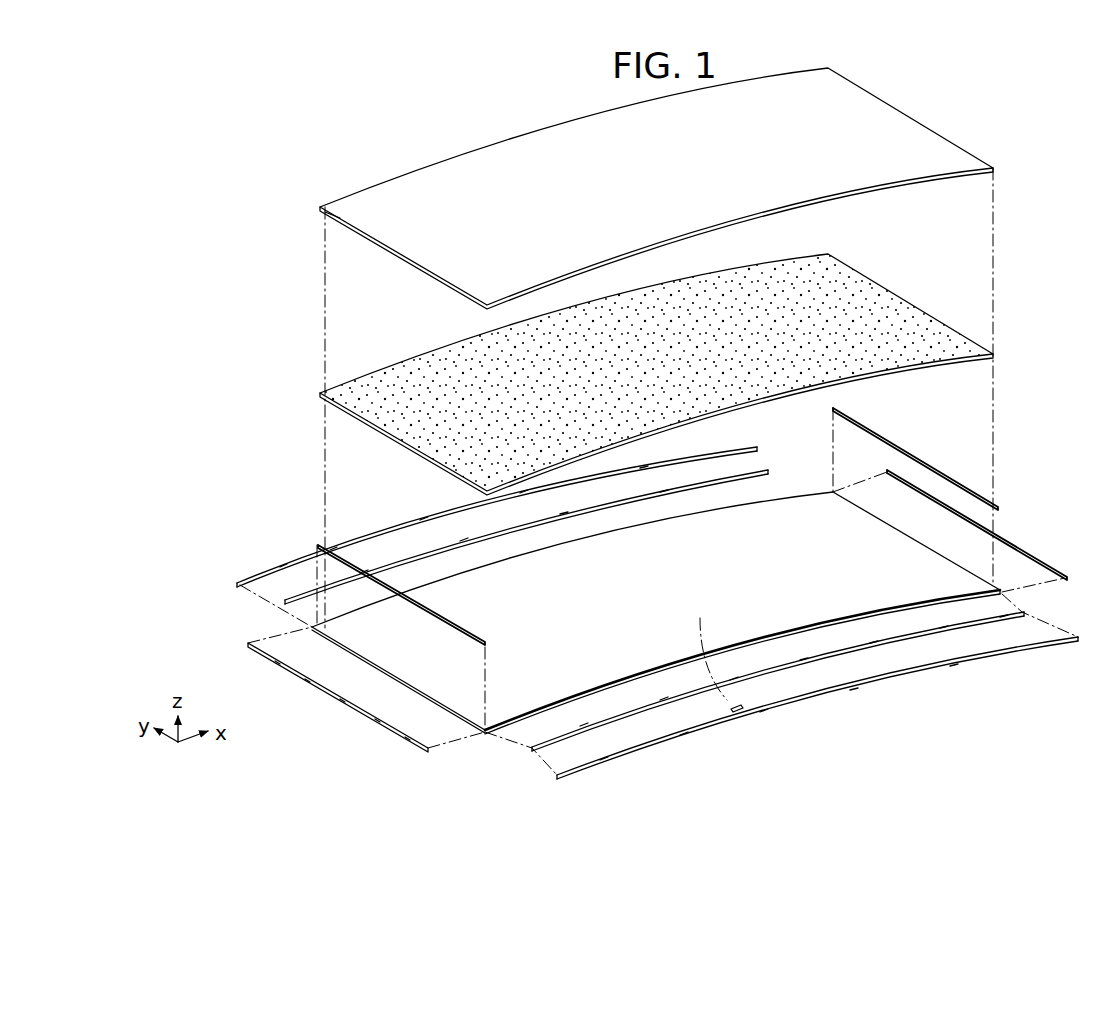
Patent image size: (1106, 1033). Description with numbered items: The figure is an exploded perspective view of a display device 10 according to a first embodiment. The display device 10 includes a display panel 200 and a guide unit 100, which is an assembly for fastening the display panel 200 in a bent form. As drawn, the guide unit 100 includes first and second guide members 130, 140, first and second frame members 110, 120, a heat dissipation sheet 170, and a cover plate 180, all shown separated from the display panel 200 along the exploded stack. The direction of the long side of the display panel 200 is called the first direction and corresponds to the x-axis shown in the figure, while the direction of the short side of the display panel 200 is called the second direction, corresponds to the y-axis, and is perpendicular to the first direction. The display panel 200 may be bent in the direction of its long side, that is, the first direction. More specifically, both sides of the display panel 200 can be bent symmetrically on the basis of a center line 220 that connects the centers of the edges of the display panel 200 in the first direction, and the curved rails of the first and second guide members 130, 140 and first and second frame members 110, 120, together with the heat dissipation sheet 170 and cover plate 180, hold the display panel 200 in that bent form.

The display device 10 is at (1019, 79).
The guide unit 100 is at (191, 278).
The first frame member 110 is at (288, 563).
The second frame member 120 is at (296, 674).
The first guide member 130 is at (433, 548).
The second guide member 140 is at (437, 618).
The heat dissipation sheet 170 is at (868, 297).
The cover plate 180 is at (874, 112).
The display panel 200 is at (770, 611).
The center line 220 is at (736, 712).